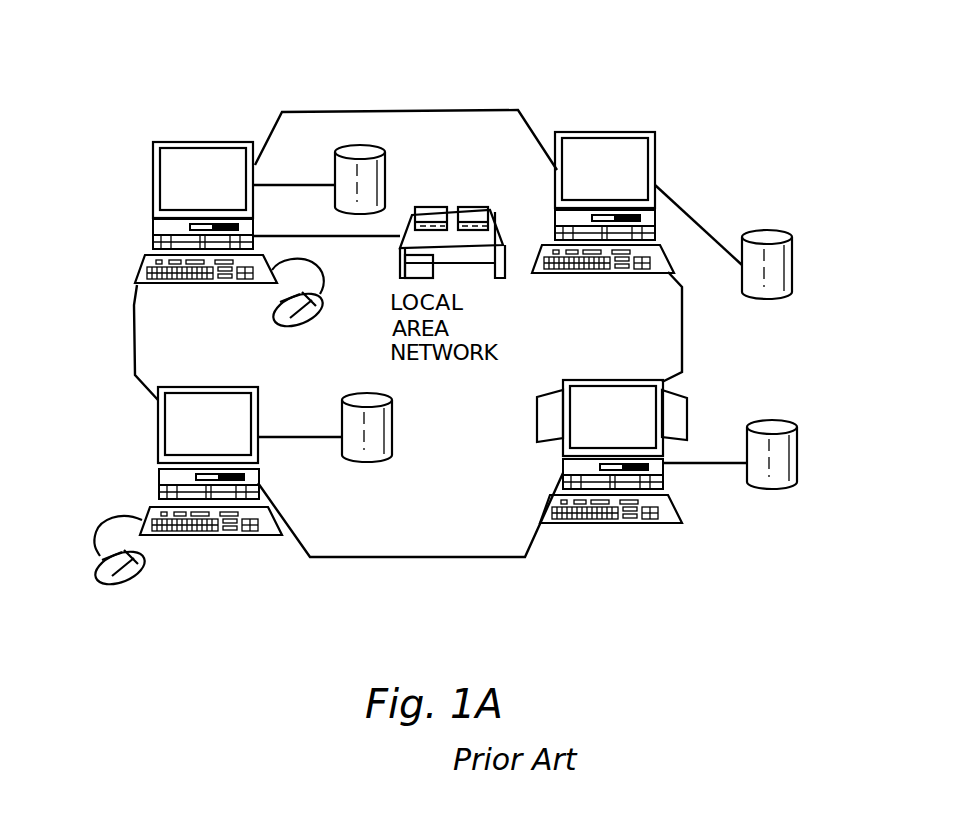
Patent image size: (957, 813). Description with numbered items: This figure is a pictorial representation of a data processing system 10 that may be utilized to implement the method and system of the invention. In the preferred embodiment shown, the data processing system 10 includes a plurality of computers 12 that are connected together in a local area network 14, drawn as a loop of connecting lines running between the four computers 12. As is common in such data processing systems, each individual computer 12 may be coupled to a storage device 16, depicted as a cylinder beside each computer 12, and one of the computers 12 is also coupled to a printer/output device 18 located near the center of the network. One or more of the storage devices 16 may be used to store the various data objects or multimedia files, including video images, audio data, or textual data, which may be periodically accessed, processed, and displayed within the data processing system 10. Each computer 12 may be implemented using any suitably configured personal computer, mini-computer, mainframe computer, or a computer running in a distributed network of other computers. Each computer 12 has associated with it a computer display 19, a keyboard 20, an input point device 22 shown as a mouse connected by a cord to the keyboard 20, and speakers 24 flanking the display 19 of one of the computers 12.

The data processing system 10 is at (430, 52).
The computer 12 is at (224, 142).
The local area network 14 is at (436, 557).
The storage device 16 is at (386, 163).
The printer/output device 18 is at (452, 210).
The computer display 19 is at (170, 177).
The keyboard 20 is at (142, 265).
The input point device 22 is at (318, 312).
The speakers 24 is at (539, 411).